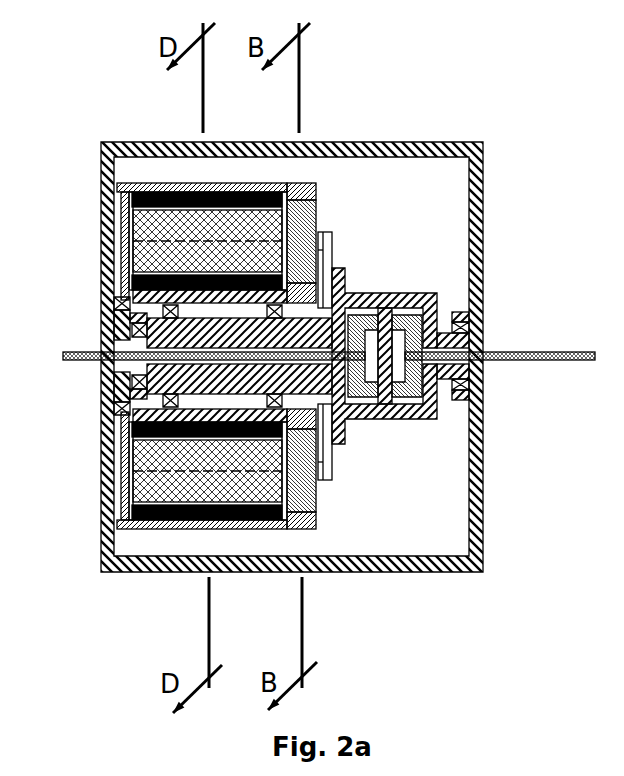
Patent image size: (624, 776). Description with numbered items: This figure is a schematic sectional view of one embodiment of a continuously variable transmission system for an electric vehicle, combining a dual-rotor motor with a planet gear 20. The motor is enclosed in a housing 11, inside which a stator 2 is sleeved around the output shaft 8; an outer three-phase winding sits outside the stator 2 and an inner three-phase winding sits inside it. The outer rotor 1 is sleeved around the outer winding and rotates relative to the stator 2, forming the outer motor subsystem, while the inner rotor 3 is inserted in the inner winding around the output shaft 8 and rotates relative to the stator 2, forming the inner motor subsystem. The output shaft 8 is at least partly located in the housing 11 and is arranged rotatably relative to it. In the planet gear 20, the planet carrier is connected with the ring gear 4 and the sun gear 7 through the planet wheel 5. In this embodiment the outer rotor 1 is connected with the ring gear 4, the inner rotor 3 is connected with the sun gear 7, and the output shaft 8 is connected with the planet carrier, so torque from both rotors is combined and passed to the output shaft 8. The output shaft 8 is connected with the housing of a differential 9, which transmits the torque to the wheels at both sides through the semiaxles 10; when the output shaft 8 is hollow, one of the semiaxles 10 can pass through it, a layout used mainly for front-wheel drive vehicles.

The outer rotor 1 is at (150, 186).
The stator 2 is at (185, 230).
The inner rotor 3 is at (222, 277).
The ring gear 4 is at (297, 185).
The planet wheel 5 is at (310, 222).
The sun gear 7 is at (316, 282).
The output shaft 8 is at (307, 380).
The differential 9 is at (358, 390).
The semiaxles 10 is at (73, 360).
The housing 11 is at (480, 208).
The planet gear 20 is at (303, 493).